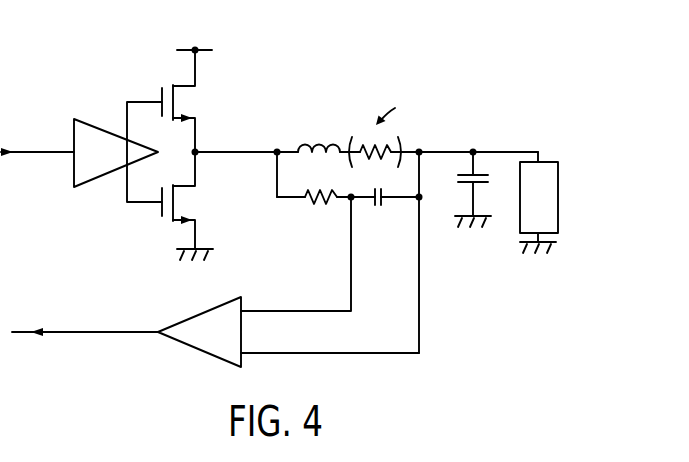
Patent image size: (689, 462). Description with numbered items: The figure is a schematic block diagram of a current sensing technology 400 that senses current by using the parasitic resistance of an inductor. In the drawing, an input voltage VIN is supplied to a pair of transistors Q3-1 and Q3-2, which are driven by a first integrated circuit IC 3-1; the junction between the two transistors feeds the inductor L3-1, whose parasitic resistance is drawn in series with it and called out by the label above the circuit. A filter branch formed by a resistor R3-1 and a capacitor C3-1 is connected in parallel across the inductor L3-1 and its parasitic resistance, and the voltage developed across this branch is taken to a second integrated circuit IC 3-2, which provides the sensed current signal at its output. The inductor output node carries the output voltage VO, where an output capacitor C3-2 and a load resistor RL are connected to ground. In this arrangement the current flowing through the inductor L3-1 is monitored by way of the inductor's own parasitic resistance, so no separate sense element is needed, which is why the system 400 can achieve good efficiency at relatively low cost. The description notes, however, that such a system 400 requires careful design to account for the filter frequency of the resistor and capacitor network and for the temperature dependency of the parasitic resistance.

The current sensing technology 400 is at (72, 55).
The driver amplifier IC 3-1 is at (116, 153).
The feedback amplifier IC 3-2 is at (199, 332).
The high-side transistor Q3-1 is at (202, 101).
The low-side transistor Q3-2 is at (202, 206).
The inductor L3-1 is at (316, 130).
The resistor R3-1 is at (313, 210).
The capacitor C3-1 is at (381, 210).
The output capacitor C3-2 is at (483, 189).
The load resistor RL is at (539, 202).
The input voltage VIN is at (217, 39).
The output voltage VO is at (491, 137).